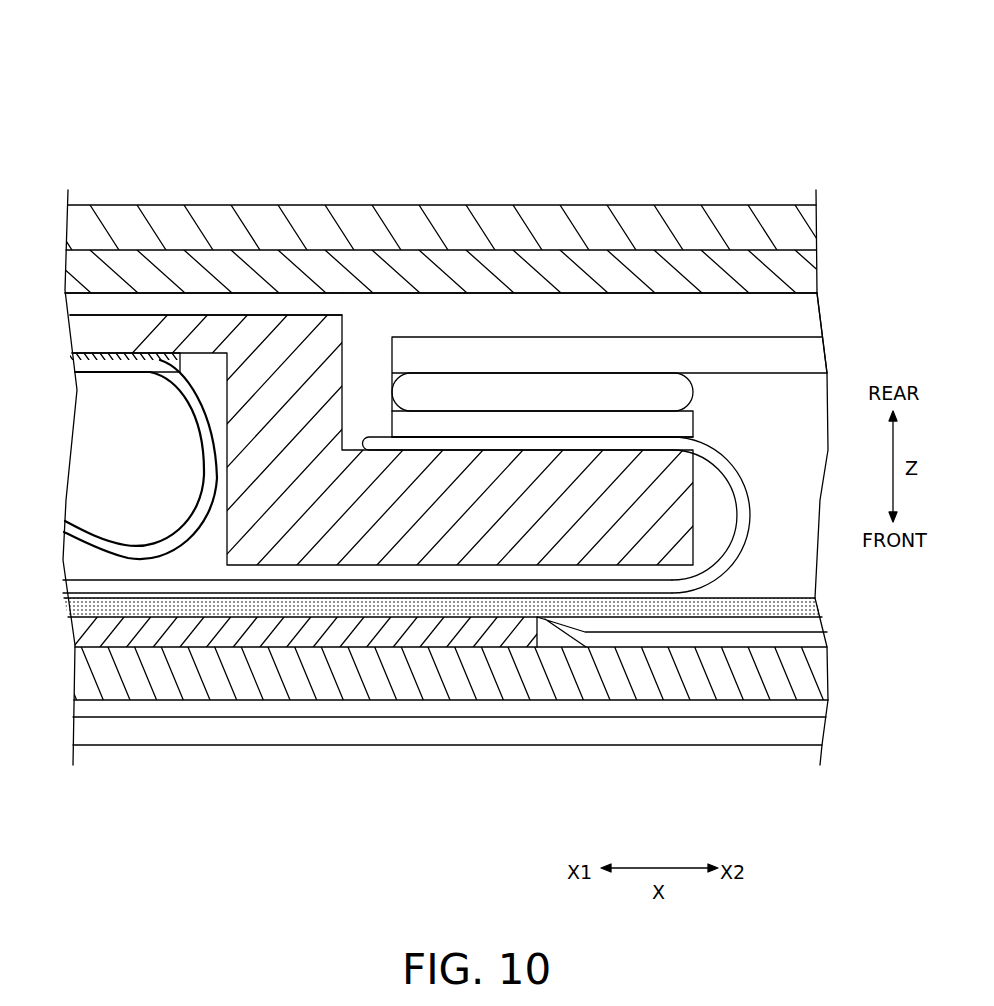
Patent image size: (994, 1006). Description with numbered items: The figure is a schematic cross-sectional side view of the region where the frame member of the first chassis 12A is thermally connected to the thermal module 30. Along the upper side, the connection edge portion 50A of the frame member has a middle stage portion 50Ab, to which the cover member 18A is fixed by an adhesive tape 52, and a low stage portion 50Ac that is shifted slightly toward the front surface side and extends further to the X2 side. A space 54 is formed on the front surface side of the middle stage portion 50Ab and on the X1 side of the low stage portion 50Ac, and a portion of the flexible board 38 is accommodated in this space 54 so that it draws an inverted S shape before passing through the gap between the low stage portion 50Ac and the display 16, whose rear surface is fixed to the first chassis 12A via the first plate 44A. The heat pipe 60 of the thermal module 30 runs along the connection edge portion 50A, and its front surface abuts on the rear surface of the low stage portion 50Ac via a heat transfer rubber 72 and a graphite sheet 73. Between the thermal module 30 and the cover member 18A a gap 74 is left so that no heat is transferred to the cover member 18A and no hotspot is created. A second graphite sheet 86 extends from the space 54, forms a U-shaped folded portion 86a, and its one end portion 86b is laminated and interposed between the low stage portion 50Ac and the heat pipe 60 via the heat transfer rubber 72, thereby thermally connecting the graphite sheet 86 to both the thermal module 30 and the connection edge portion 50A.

The first chassis 12A is at (603, 75).
The display 16 is at (378, 735).
The cover member 18A is at (330, 220).
The thermal module 30 is at (832, 327).
The flexible board 38 is at (202, 440).
The first plate 44A is at (522, 680).
The connection edge portion 50A is at (463, 465).
The middle stage portion 50Ab is at (463, 567).
The low stage portion 50Ac is at (370, 517).
The adhesive tape 52 is at (155, 303).
The space 54 is at (117, 425).
The heat pipe 60 is at (543, 393).
The heat transfer rubber 72 is at (500, 423).
The graphite sheet 73 is at (593, 437).
The gap 74 is at (722, 313).
The graphite sheet 86 is at (220, 478).
The U-shaped folded portion 86a is at (748, 498).
The one end portion 86b is at (467, 447).